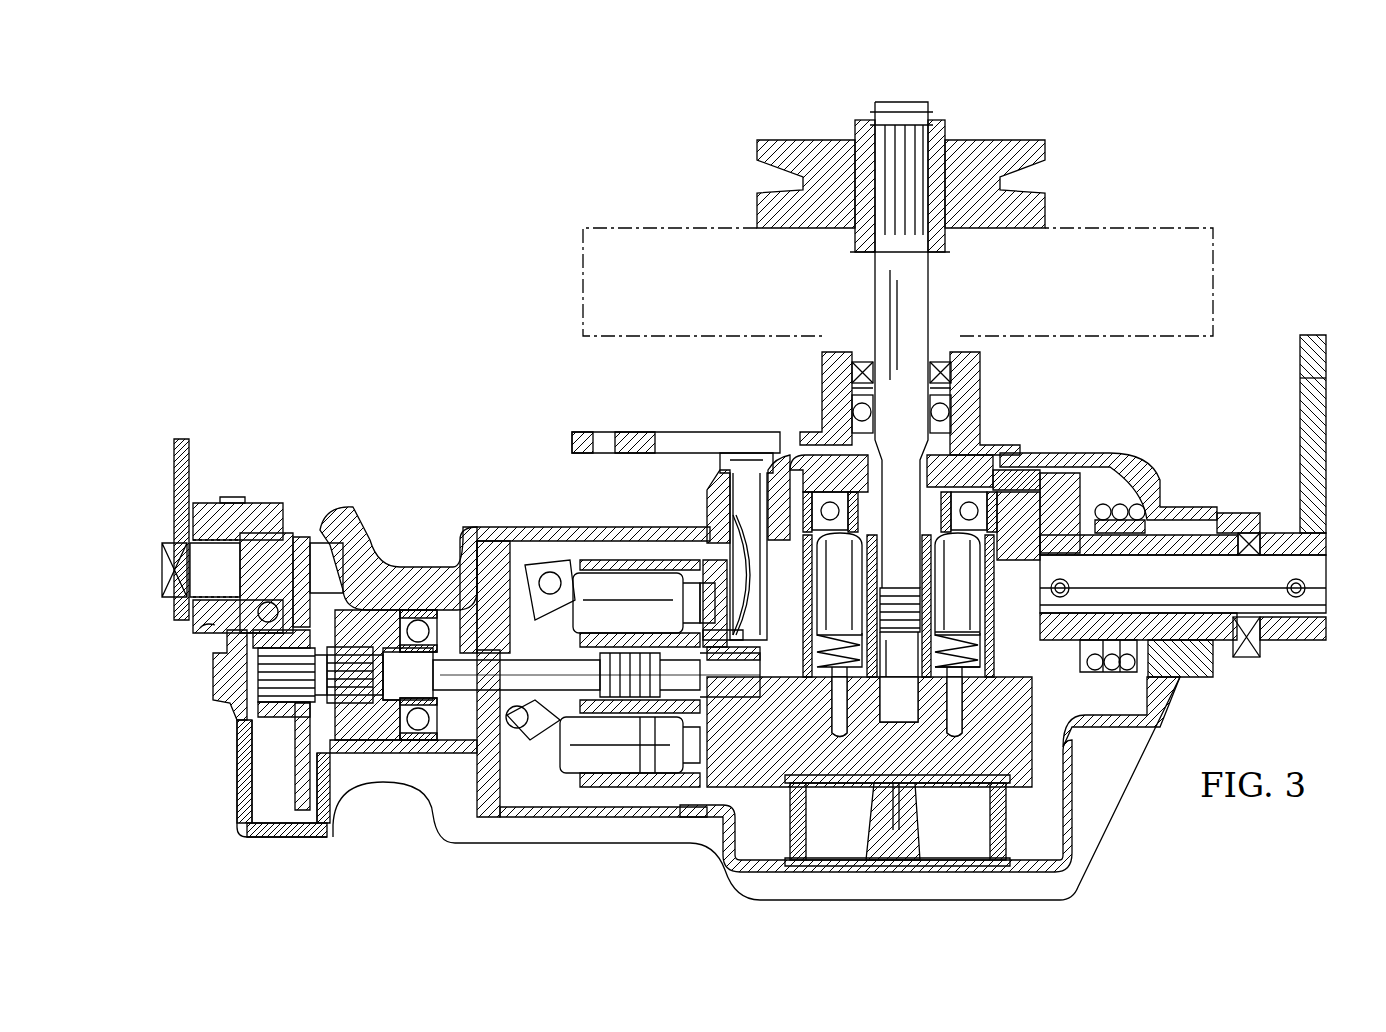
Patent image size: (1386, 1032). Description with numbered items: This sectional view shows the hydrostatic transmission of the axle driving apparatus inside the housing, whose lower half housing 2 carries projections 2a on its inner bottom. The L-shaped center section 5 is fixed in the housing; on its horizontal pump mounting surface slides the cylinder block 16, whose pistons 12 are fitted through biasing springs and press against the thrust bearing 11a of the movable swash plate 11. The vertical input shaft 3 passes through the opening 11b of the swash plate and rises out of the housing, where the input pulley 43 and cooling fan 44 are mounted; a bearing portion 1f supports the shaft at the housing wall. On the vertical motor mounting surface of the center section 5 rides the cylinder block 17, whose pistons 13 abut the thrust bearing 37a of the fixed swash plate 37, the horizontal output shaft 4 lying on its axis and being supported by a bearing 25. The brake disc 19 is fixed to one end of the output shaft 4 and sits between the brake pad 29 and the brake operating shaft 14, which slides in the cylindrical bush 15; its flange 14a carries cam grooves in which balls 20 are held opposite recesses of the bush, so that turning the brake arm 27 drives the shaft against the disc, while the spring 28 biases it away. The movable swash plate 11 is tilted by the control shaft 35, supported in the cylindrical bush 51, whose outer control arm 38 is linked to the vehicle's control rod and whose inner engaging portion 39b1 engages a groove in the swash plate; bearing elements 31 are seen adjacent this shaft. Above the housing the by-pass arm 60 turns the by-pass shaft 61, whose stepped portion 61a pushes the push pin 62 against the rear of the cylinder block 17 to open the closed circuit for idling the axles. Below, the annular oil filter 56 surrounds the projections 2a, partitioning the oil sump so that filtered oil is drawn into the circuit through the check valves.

The bearing housing portion 1f is at (968, 380).
The lower half housing 2 is at (1078, 823).
The projections 2a is at (920, 821).
The input shaft 3 is at (928, 264).
The output shaft 4 is at (415, 686).
The center section 5 is at (1032, 698).
The movable swash plate 11 is at (800, 452).
The thrust bearing 11a is at (1021, 526).
The opening 11b is at (955, 465).
The pistons 12 is at (972, 600).
The pistons 13 is at (626, 602).
The brake operating shaft 14 is at (222, 581).
The flange 14a is at (285, 530).
The cylindrical bush 15 is at (210, 503).
The cylinder block 16 is at (995, 640).
The cylinder block 17 is at (618, 565).
The brake disc 19 is at (293, 780).
The balls 20 is at (260, 620).
The bearing 25 is at (372, 620).
The brake arm 27 is at (182, 438).
The spring 28 is at (205, 633).
The brake pad 29 is at (343, 530).
The balls 31 is at (1120, 505).
The control shaft 35 is at (1318, 556).
The fixed swash plate 37 is at (508, 527).
The thrust bearing 37a is at (553, 565).
The control arm 38 is at (1315, 335).
The engaging portion 39b1 is at (1062, 473).
The input pulley 43 is at (1045, 147).
The cooling fan 44 is at (1213, 226).
The cylindrical bush 51 is at (1240, 512).
The oil filter 56 is at (1010, 810).
The by-pass arm 60 is at (655, 432).
The by-pass shaft 61 is at (745, 460).
The stepped portion 61a is at (728, 610).
The push pin 62 is at (776, 615).